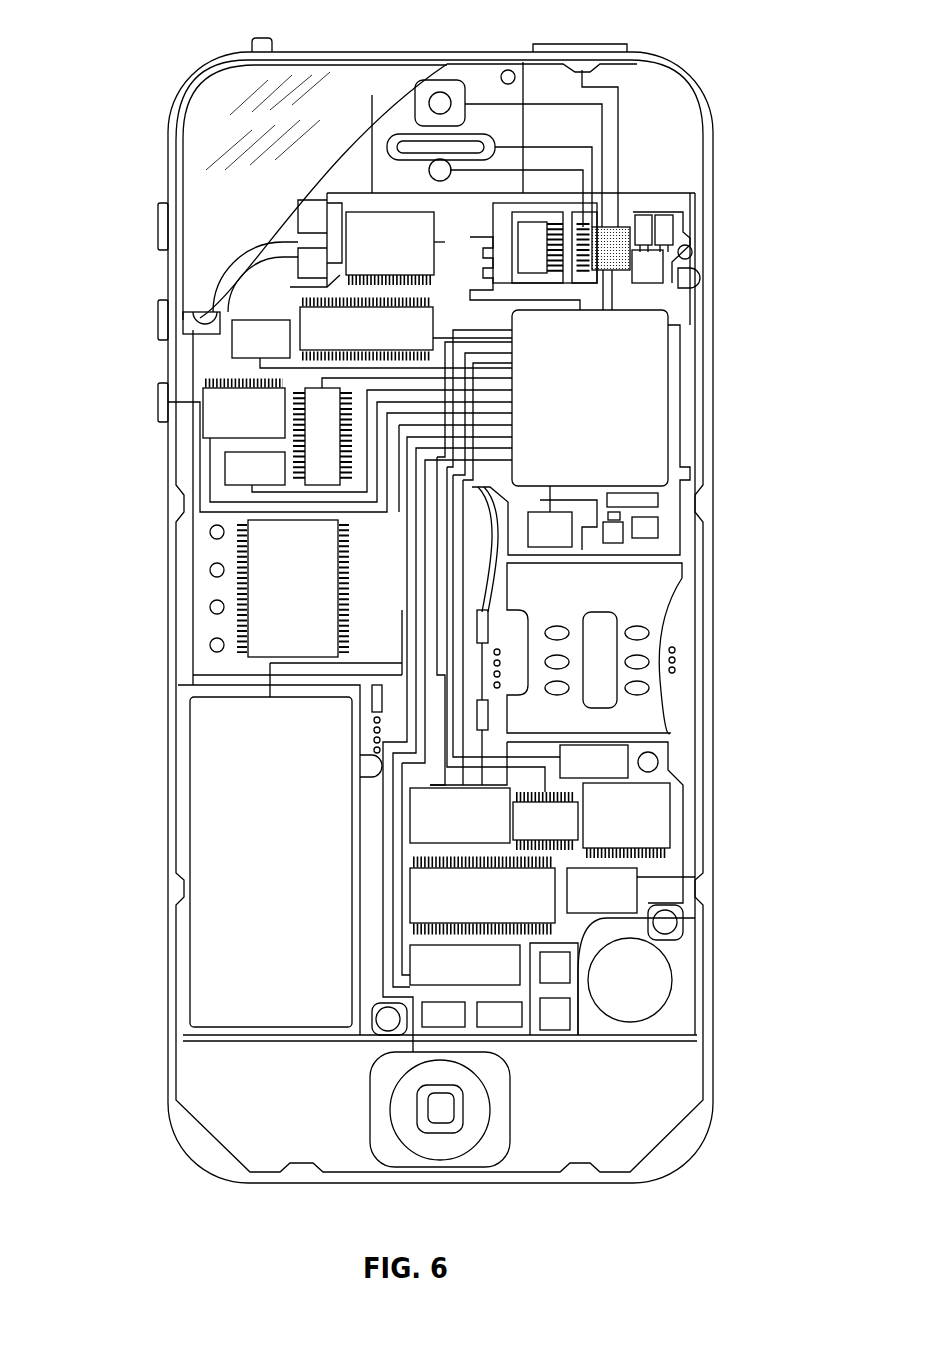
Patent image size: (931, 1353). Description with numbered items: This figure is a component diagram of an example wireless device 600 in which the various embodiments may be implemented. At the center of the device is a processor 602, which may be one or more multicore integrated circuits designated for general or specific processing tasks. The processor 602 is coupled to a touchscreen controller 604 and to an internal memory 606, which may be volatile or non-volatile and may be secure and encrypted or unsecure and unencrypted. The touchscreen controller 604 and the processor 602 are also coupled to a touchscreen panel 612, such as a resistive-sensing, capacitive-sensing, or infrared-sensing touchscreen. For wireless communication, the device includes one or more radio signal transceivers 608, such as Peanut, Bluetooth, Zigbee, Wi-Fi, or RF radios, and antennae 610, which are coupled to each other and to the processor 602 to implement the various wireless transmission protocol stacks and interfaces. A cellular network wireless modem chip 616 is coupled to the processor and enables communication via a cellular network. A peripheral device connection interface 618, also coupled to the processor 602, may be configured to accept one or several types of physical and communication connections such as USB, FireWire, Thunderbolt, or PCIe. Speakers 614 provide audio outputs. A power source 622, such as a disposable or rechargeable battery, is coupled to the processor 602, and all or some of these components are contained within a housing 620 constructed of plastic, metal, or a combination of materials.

The wireless device 600 is at (140, 90).
The processor 602 is at (590, 398).
The touchscreen controller 604 is at (395, 246).
The internal memory 606 is at (366, 329).
The radio signal transceivers 608 is at (620, 228).
The antennae 610 is at (663, 268).
The touchscreen panel 612 is at (195, 157).
The speakers 614 is at (403, 134).
The cellular network wireless modem chip 616 is at (482, 895).
The peripheral device connection interface 618 is at (465, 965).
The housing 620 is at (714, 1050).
The power source 622 is at (280, 860).